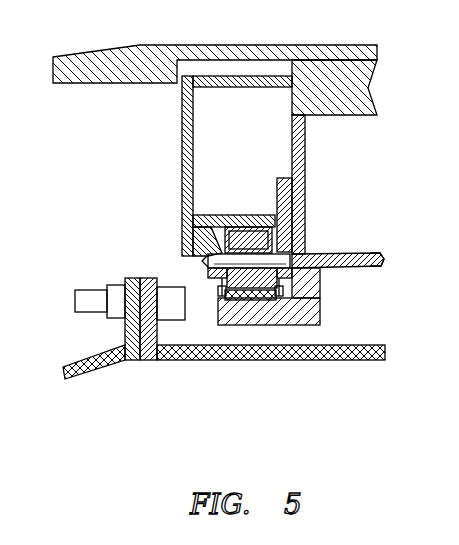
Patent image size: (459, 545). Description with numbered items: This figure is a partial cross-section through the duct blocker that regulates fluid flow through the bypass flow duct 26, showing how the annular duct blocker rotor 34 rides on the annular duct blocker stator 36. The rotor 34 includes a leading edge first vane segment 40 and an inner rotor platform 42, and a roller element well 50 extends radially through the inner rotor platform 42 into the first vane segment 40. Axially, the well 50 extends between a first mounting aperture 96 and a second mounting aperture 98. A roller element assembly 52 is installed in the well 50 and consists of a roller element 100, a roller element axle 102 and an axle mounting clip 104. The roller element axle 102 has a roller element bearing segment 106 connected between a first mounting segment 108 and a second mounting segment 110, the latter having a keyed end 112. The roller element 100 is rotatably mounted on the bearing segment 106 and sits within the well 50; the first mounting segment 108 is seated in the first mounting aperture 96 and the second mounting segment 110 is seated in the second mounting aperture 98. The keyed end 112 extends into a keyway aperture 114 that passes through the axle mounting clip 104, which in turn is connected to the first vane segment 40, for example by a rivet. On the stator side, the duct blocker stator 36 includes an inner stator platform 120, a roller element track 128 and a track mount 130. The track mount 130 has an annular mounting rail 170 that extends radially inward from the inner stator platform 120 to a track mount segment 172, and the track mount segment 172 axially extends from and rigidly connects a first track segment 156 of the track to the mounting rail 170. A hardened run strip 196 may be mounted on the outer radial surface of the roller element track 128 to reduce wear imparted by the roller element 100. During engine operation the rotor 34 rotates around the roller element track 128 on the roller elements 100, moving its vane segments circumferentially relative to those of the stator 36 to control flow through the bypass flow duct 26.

The bypass flow duct 26 is at (104, 198).
The duct blocker rotor 34 is at (181, 138).
The duct blocker stator 36 is at (378, 88).
The first vane segment 40 is at (181, 105).
The inner rotor platform 42 is at (186, 255).
The roller element well 50 is at (281, 185).
The roller element assembly 52 is at (210, 247).
The first mounting aperture 96 is at (137, 318).
The second mounting aperture 98 is at (320, 290).
The roller element 100 is at (245, 232).
The roller element axle 102 is at (203, 263).
The axle mounting clip 104 is at (306, 213).
The roller element bearing segment 106 is at (260, 300).
The first mounting segment 108 is at (172, 348).
The second mounting segment 110 is at (320, 310).
The keyed end 112 is at (306, 252).
The keyway aperture 114 is at (318, 274).
The inner stator platform 120 is at (374, 254).
The roller element track 128 is at (252, 331).
The track mount 130 is at (318, 323).
The first track segment 156 is at (233, 330).
The mounting rail 170 is at (308, 327).
The track mount segment 172 is at (290, 320).
The hardened run strip 196 is at (207, 315).